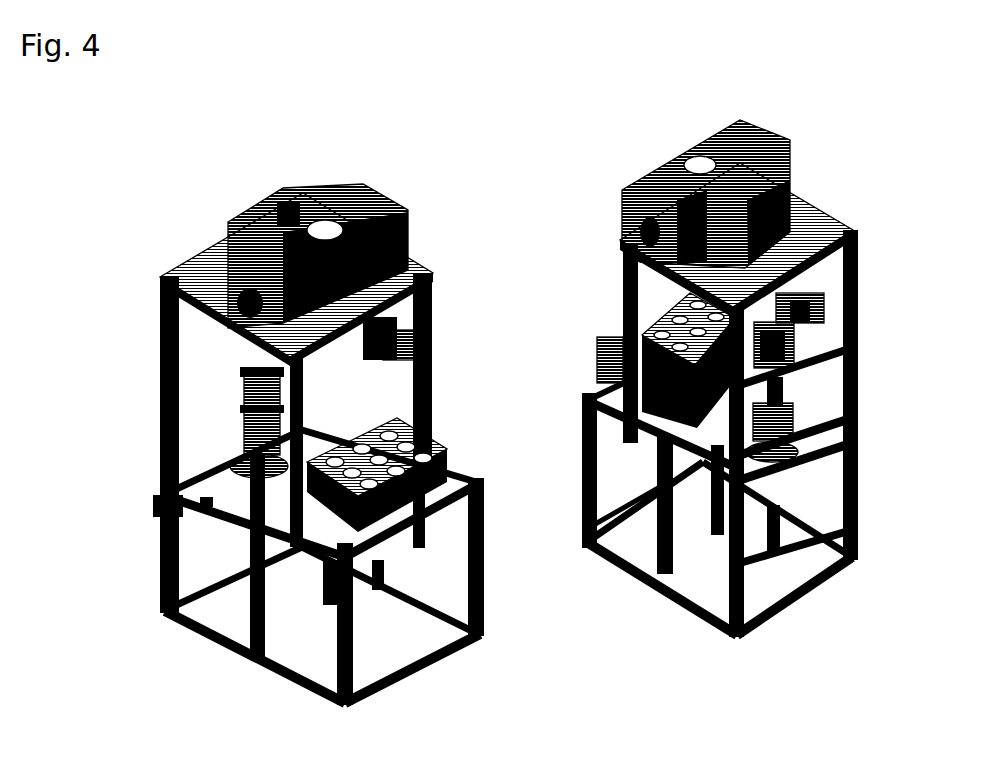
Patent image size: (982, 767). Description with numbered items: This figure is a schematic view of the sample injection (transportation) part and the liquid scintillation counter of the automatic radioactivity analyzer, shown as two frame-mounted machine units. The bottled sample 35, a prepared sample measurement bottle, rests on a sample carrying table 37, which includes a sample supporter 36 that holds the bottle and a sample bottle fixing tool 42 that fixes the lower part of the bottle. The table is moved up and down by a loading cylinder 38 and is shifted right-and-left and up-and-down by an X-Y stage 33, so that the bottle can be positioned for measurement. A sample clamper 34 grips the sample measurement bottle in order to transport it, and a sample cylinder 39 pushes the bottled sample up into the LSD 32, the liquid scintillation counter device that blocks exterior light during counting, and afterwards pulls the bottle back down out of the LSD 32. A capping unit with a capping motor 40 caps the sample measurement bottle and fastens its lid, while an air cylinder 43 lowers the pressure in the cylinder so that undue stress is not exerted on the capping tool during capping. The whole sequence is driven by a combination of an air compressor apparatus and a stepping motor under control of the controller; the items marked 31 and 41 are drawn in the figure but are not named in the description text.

The motor 31 is at (303, 195).
The LSD 32 is at (638, 201).
The X-Y stage 33 is at (428, 330).
The sample clamper 34 is at (395, 340).
The bottled sample 35 is at (272, 381).
The sample supporter 36 is at (423, 420).
The sample carrying table 37 is at (447, 449).
The loading cylinder 38 is at (665, 447).
The sample cylinder 39 is at (700, 527).
The capping motor 40 is at (812, 318).
The cylinder unit 41 is at (772, 362).
The sample bottle fixing tool 42 is at (792, 428).
The air cylinder 43 is at (794, 540).